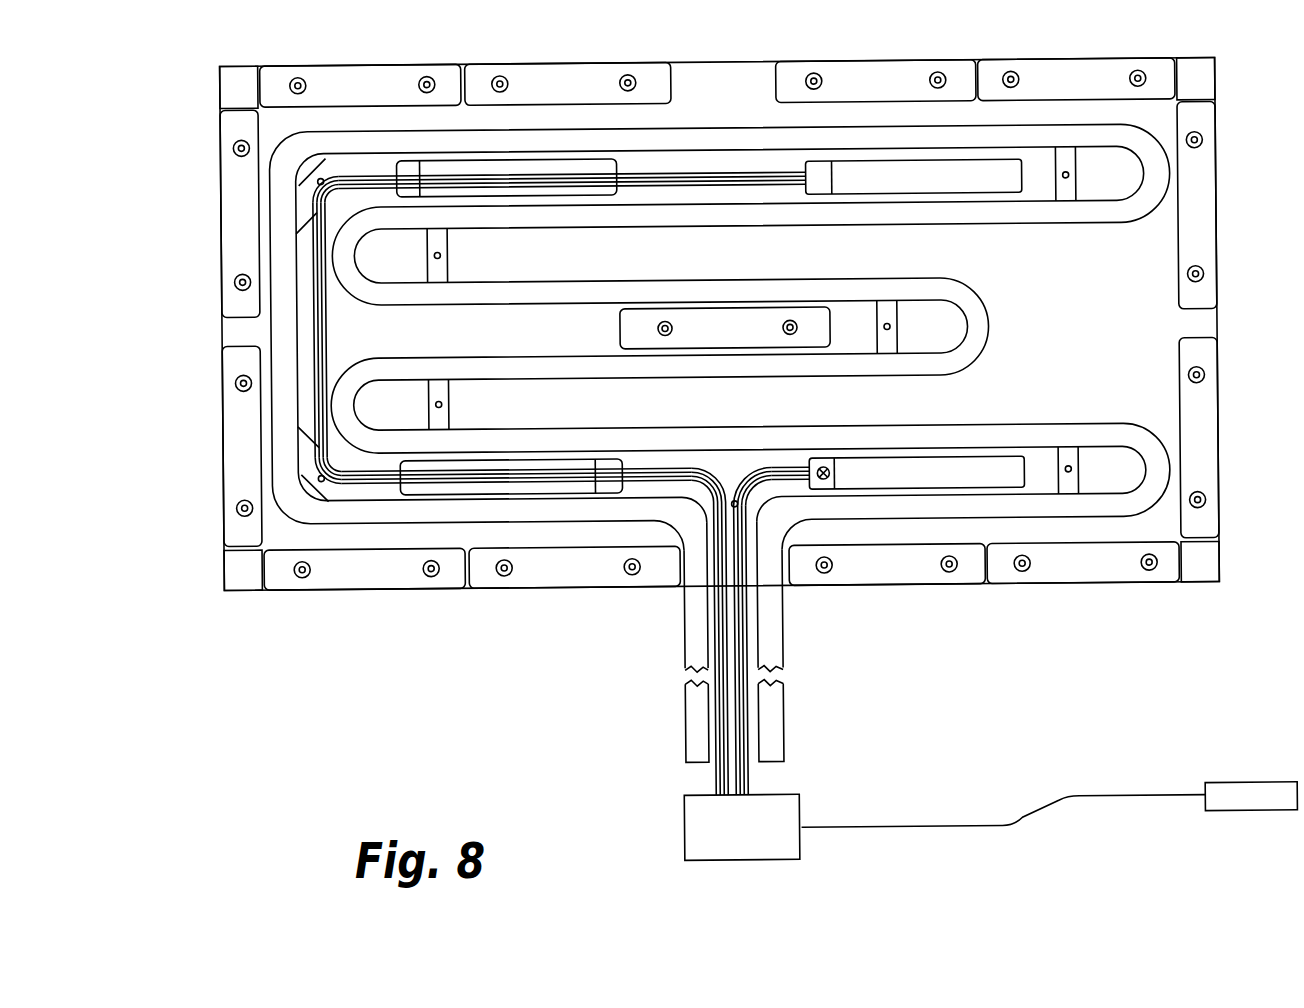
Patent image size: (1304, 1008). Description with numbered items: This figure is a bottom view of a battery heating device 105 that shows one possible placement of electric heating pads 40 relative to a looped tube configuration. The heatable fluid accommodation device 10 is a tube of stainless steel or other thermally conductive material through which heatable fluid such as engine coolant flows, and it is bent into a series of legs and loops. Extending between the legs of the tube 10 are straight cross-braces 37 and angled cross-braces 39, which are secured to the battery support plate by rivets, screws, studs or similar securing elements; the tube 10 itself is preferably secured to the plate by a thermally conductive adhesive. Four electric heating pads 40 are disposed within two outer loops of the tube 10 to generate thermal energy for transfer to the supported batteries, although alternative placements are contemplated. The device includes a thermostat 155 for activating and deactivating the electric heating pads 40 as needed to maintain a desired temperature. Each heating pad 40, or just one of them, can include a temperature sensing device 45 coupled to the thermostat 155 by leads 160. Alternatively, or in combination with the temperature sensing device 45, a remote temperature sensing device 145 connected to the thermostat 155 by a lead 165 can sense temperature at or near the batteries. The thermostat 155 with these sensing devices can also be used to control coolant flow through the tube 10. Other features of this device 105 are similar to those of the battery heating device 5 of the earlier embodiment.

The battery heating device 105 is at (186, 158).
The heatable fluid accommodation device 10 is at (988, 316).
The straight cross-brace 37 is at (1091, 176).
The electric heating device 40 is at (893, 491).
The temperature sensing device 45 is at (826, 467).
The leads 160 is at (697, 172).
The angled cross-brace 39 is at (340, 493).
The battery heating device 5 is at (757, 772).
The thermostat 155 is at (757, 861).
The lead 165 is at (950, 829).
The remote temperature sensing device 145 is at (1223, 815).